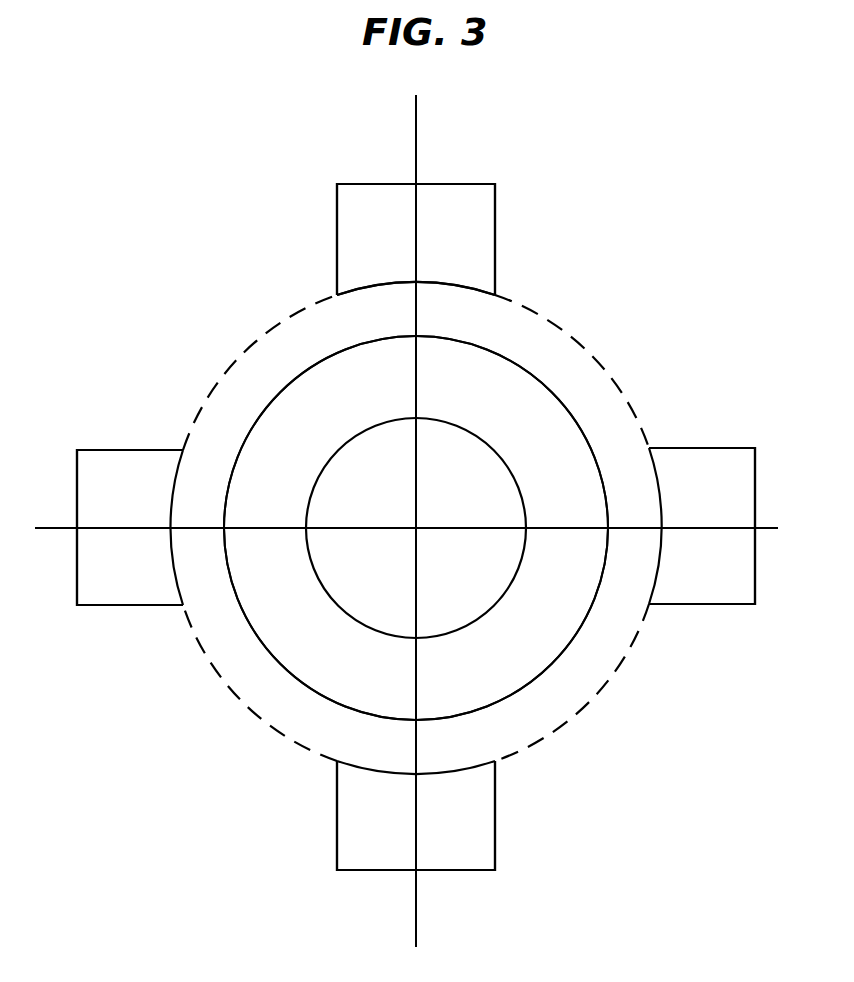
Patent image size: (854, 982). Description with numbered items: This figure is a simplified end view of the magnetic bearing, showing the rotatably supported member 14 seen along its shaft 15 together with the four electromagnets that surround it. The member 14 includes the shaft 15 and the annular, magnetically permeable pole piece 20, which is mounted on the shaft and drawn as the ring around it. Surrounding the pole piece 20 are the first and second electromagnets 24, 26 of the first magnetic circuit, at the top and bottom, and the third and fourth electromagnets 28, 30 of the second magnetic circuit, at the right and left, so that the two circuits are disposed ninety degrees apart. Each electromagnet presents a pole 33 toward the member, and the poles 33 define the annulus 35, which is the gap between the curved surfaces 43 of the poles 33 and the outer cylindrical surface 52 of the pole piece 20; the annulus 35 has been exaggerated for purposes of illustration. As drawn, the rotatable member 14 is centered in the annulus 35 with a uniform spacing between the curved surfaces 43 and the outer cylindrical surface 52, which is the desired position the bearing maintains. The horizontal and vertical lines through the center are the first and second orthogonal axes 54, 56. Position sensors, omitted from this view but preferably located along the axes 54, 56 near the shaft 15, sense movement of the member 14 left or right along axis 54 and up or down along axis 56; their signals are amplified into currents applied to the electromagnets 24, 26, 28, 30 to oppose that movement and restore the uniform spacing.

The rotatably supported member 14 is at (278, 673).
The shaft 15 is at (469, 492).
The first magnetically permeable pole piece 20 is at (313, 439).
The first electromagnet 24 is at (484, 180).
The second electromagnet 26 is at (499, 812).
The third electromagnet 28 is at (735, 609).
The fourth electromagnet 30 is at (102, 609).
The poles 33 is at (466, 254).
The annulus 35 is at (466, 322).
The curved surfaces of the poles 43 is at (395, 284).
The outer cylindrical surface of the pole piece 52 is at (263, 411).
The first orthogonal axis 54 is at (58, 529).
The second orthogonal axis 56 is at (418, 921).